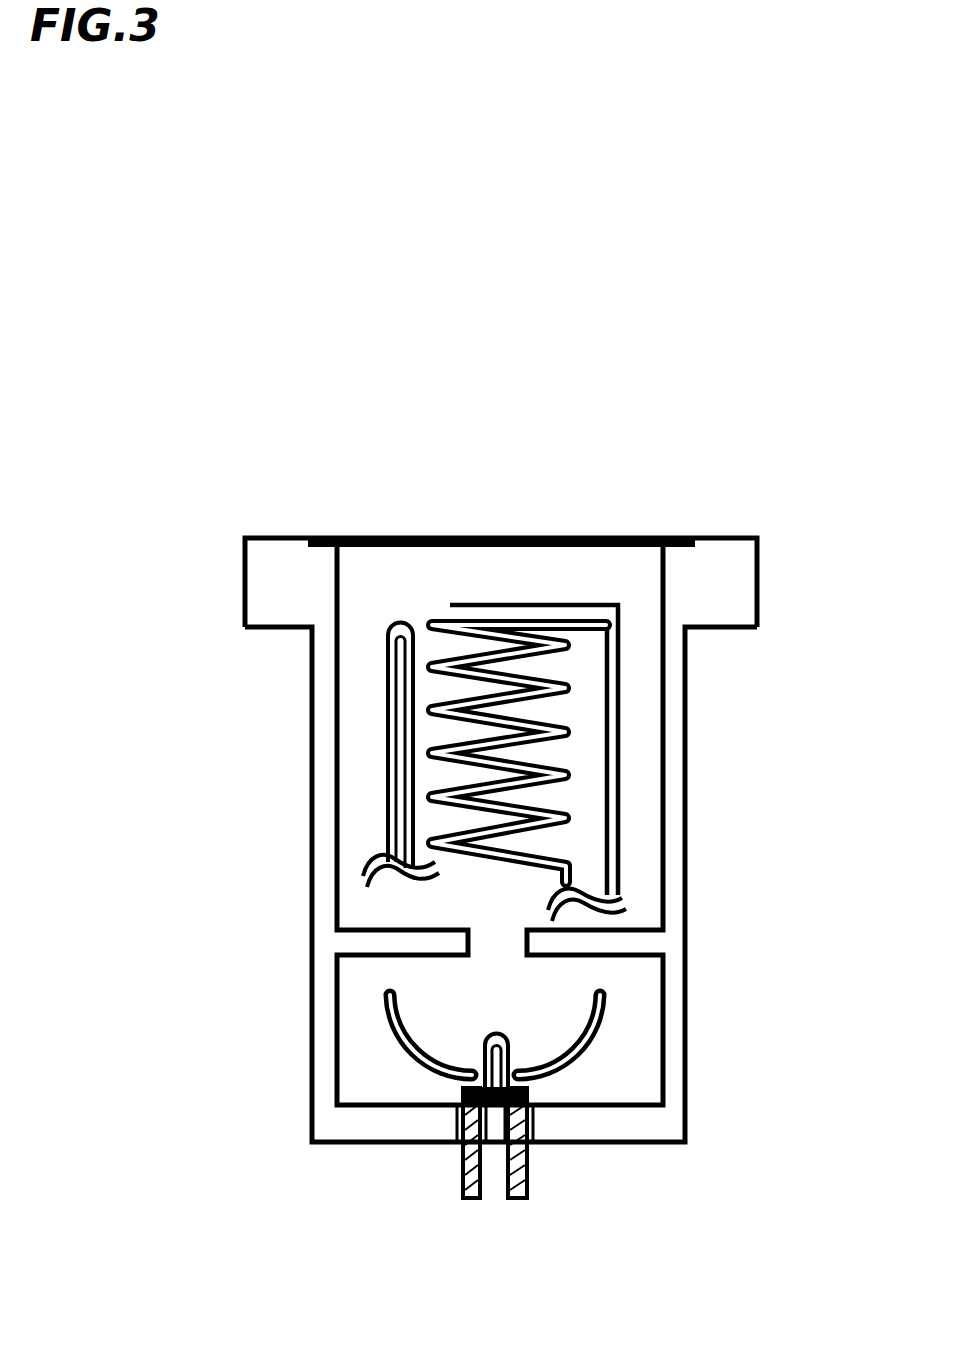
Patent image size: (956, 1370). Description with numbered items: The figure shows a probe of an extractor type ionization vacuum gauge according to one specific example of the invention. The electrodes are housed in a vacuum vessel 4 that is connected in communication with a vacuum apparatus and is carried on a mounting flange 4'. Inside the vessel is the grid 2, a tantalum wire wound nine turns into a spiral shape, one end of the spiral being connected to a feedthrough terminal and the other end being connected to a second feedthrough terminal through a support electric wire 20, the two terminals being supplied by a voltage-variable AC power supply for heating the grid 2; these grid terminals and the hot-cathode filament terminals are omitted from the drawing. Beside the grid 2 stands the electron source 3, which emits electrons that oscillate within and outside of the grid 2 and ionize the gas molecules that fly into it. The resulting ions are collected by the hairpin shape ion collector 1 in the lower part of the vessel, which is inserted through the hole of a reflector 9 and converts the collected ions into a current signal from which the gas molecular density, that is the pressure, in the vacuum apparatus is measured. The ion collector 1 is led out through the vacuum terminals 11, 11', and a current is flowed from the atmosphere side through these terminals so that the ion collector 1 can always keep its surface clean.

The ion collector 1 is at (500, 1040).
The grid 2 is at (468, 622).
The electron source 3 is at (387, 725).
The vacuum vessel 4 is at (542, 844).
The mounting flange 4' is at (539, 549).
The reflector 9 is at (604, 993).
The vacuum terminal 11 is at (551, 1172).
The vacuum terminal 11' is at (452, 1178).
The support electric wire 20 is at (610, 770).